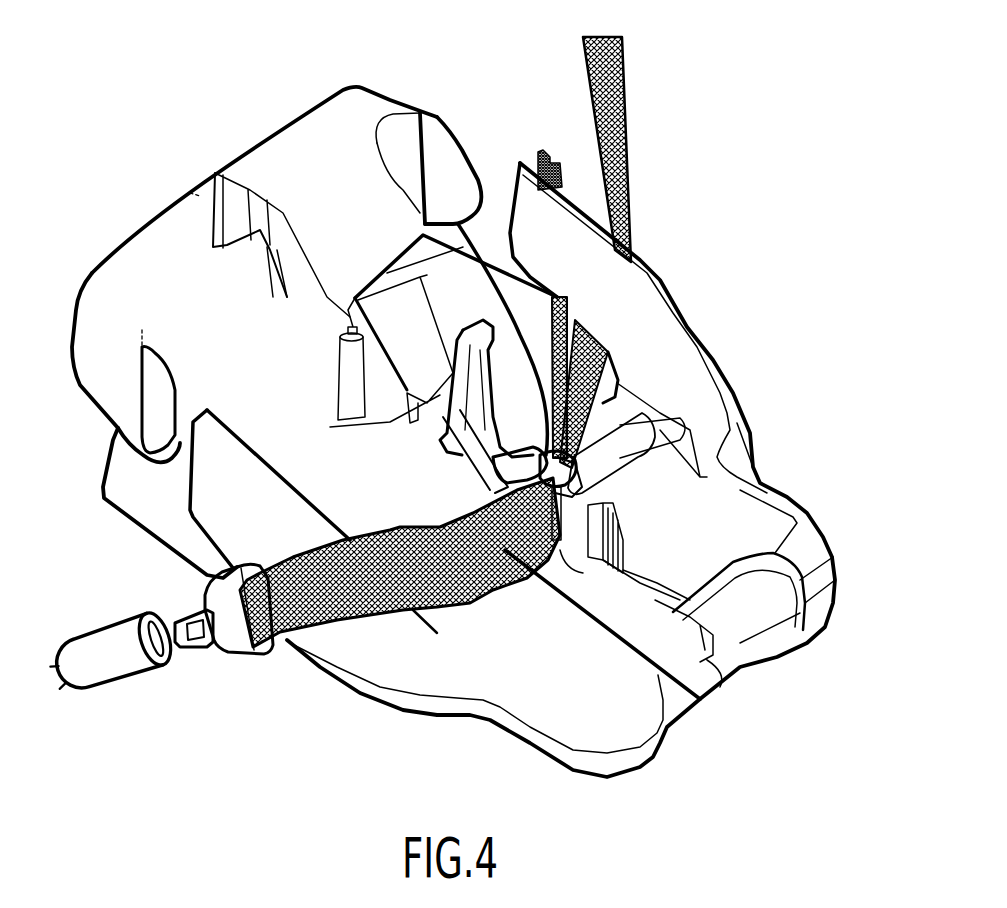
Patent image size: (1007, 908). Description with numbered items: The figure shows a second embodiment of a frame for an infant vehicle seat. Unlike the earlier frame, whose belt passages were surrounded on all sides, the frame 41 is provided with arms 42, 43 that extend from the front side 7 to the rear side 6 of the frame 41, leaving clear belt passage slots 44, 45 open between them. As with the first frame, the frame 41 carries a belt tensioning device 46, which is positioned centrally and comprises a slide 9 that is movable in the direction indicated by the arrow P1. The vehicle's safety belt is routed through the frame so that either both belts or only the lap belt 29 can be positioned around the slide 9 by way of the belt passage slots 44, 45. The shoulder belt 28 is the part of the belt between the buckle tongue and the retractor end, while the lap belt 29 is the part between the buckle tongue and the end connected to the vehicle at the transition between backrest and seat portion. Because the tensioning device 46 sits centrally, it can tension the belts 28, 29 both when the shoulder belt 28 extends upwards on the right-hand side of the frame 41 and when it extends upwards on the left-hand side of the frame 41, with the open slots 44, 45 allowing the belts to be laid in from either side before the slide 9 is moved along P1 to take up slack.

The rear side 6 is at (182, 197).
The frame 41 is at (405, 93).
The belt passage slot 44 is at (500, 187).
The lap belt 29 is at (545, 150).
The shoulder belt 28 is at (627, 88).
The arm 42 is at (633, 317).
The belt passage slot 45 is at (114, 447).
The belt tensioning device 46 is at (432, 478).
The slide 9 is at (500, 477).
The arm 43 is at (240, 503).
The front side 7 is at (753, 668).
The arrow P1 is at (618, 655).